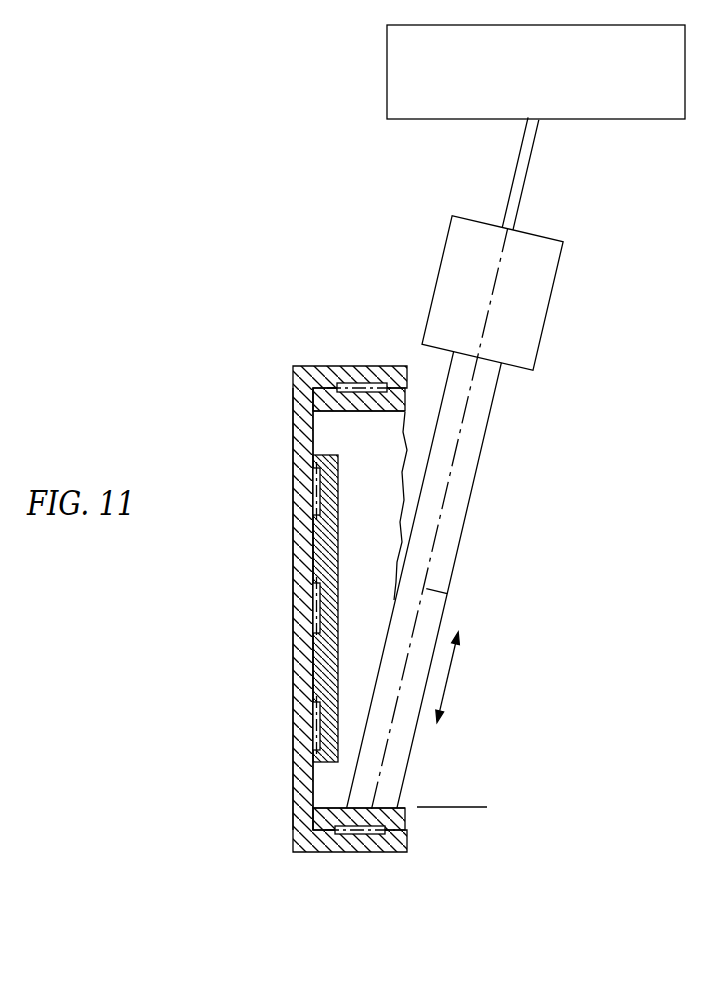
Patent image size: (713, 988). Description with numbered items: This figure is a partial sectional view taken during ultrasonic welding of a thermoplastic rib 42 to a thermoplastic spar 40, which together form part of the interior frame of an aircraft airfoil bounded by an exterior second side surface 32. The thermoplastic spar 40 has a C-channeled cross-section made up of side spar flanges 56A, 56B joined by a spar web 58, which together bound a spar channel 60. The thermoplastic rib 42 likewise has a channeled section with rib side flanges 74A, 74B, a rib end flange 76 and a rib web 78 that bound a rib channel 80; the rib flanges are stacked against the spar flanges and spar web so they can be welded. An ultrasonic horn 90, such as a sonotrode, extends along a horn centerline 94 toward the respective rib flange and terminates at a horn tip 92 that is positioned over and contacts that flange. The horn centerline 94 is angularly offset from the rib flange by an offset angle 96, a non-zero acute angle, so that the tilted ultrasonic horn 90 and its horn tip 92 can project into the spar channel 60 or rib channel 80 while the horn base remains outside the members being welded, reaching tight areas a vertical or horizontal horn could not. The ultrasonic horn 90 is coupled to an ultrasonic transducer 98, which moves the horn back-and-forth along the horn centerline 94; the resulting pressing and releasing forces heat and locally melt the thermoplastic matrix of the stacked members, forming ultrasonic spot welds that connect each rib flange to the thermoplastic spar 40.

The exterior second side surface 32 is at (232, 340).
The thermoplastic composite spar 40 is at (280, 421).
The thermoplastic composite rib 42 is at (393, 836).
The side spar flange 56A is at (342, 362).
The side spar flange 56B is at (357, 864).
The spar web 58 is at (287, 645).
The spar channel 60 is at (396, 384).
The rib side flange 74A is at (362, 420).
The rib side flange 74B is at (416, 826).
The rib end flange 76 is at (347, 548).
The rib web 78 is at (410, 468).
The rib channel 80 is at (356, 686).
The ultrasonic horn 90 is at (503, 415).
The horn tip 92 is at (352, 826).
The horn centerline 94 is at (458, 597).
The offset angle 96 is at (395, 726).
The ultrasonic transducer 98 is at (550, 103).